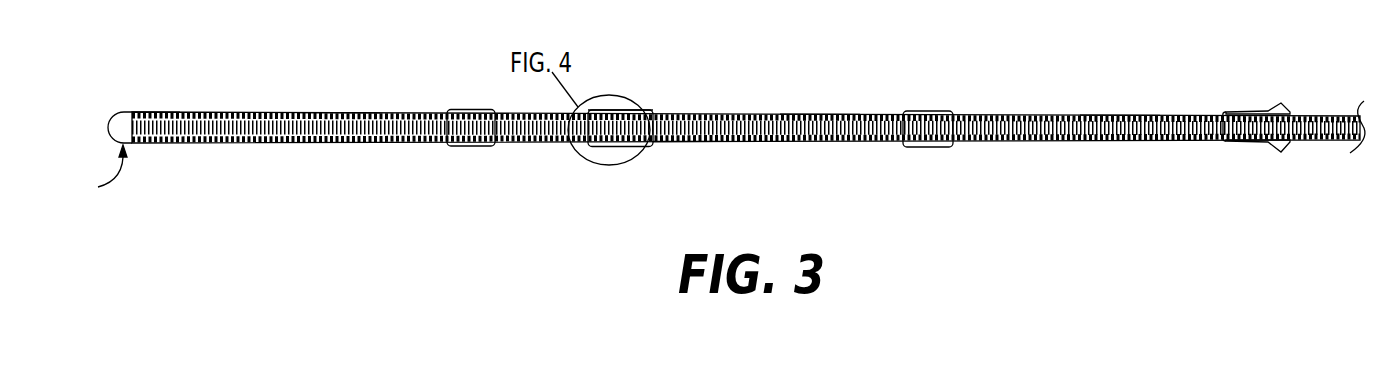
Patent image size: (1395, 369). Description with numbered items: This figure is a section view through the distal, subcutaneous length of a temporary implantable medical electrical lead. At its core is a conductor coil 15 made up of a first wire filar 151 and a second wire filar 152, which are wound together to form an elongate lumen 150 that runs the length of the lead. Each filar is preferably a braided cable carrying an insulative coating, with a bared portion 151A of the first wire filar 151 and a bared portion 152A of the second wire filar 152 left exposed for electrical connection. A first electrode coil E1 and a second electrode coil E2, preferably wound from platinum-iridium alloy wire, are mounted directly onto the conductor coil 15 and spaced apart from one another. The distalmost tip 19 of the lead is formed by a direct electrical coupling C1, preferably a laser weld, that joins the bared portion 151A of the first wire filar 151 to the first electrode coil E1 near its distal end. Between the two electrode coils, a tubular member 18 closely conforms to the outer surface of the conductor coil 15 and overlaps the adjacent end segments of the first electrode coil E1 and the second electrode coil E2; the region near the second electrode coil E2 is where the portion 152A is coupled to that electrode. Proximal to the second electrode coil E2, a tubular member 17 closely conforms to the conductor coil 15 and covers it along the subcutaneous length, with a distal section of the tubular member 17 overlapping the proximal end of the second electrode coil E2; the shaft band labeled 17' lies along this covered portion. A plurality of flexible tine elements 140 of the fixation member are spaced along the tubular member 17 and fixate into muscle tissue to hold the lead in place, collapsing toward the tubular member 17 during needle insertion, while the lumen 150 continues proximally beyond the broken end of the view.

The conductor coil 15 is at (1082, 141).
The tubular member 17 is at (1122, 95).
The tube band 17' is at (953, 108).
The tubular member 18 is at (513, 146).
The distalmost tip 19 is at (111, 131).
The tine elements 140 is at (1263, 148).
The elongate lumen 150 is at (1364, 147).
The first wire filar 151 is at (643, 147).
The portion of first wire filar 151A is at (158, 112).
The second wire filar 152 is at (576, 146).
The portion of second wire filar 152A is at (603, 112).
The first electrode coil E1 is at (340, 112).
The second electrode coil E2 is at (822, 112).
The direct electrical coupling C1 is at (99, 172).